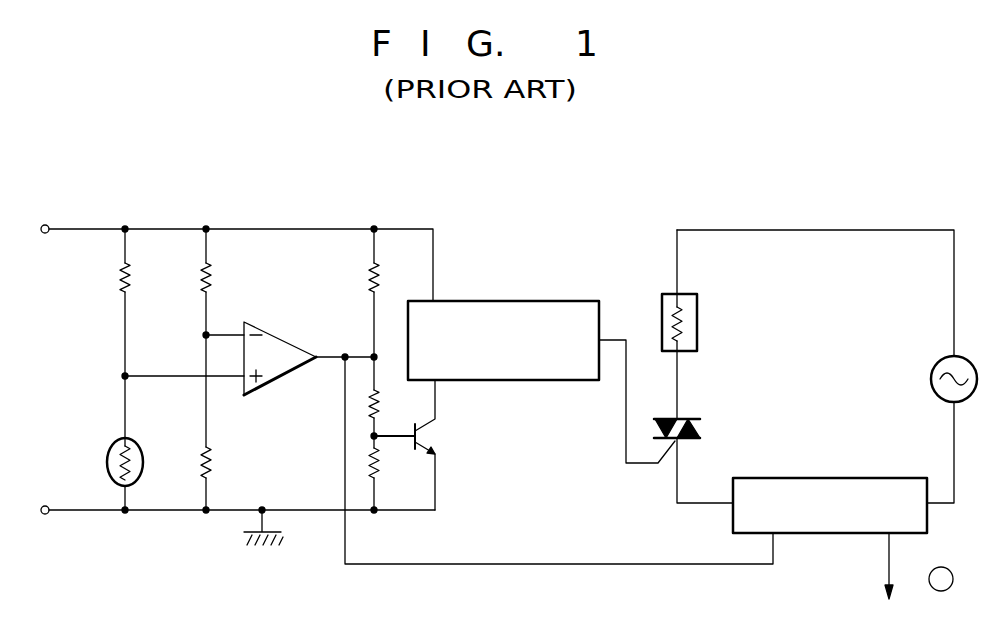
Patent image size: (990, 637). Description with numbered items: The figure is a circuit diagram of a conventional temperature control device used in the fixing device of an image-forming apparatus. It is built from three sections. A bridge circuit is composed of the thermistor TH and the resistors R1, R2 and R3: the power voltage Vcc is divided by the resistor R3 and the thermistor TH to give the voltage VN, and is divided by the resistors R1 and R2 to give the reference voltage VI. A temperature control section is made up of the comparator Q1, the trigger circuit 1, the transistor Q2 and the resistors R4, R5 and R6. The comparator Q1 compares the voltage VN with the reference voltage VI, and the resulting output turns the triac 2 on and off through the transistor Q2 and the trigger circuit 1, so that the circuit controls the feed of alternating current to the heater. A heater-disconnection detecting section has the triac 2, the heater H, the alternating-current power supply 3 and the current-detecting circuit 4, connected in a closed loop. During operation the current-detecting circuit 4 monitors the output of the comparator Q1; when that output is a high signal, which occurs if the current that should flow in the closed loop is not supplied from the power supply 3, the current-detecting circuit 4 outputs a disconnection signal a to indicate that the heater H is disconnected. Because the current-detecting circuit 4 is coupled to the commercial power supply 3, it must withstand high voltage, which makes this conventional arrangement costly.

The trigger circuit 1 is at (538, 300).
The triac 2 is at (700, 425).
The alternating-current power supply 3 is at (932, 366).
The current-detecting circuit 4 is at (849, 478).
The heater H is at (698, 330).
The disconnection signal a is at (900, 576).
The power voltage Vcc is at (41, 210).
The resistor R1 is at (201, 280).
The resistor R2 is at (212, 462).
The resistor R3 is at (120, 280).
The resistor R4 is at (369, 280).
The resistor R5 is at (380, 410).
The resistor R6 is at (380, 462).
The thermistor TH is at (143, 456).
The reference voltage VI is at (204, 335).
The voltage VN is at (126, 376).
The comparator Q1 is at (269, 334).
The transistor Q2 is at (436, 438).